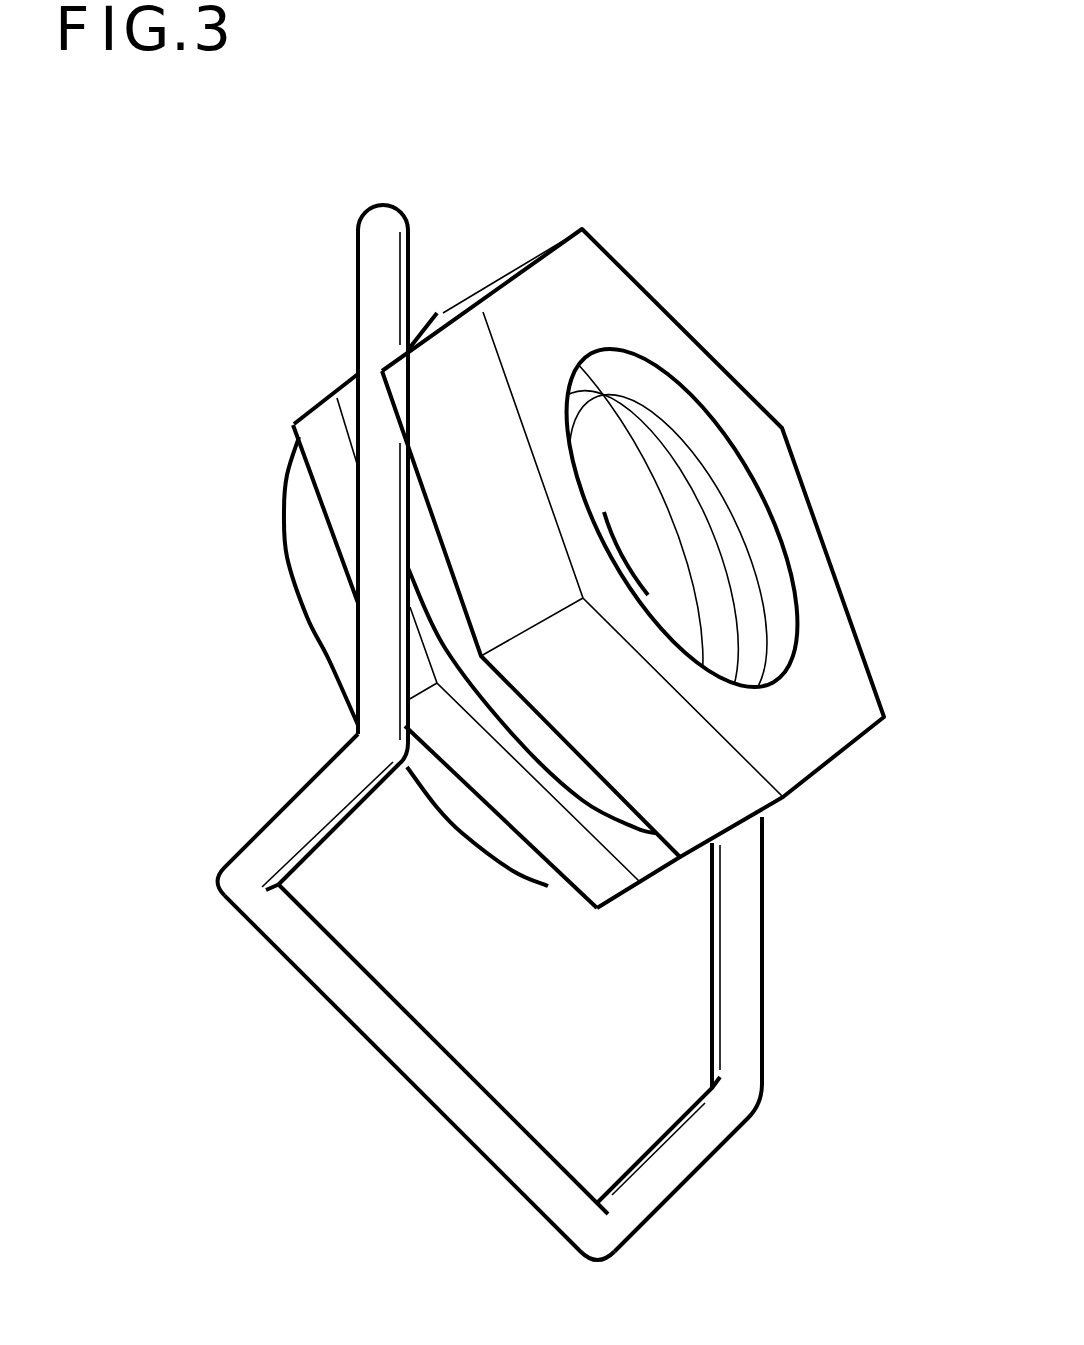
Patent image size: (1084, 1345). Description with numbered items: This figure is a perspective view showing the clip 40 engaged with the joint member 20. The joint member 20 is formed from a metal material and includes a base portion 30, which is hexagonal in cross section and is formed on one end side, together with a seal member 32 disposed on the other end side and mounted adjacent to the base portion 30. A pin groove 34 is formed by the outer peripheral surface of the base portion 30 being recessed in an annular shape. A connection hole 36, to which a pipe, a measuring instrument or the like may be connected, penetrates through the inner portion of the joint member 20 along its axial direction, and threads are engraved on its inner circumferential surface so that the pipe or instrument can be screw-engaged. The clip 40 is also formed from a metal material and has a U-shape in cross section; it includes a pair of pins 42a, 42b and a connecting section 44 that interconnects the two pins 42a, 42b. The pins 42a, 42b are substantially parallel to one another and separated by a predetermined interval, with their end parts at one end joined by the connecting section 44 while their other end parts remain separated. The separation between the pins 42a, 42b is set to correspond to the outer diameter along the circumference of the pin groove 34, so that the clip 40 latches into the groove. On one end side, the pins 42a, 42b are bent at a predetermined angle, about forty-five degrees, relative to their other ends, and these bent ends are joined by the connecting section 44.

The joint member 20 is at (760, 378).
The base portion 30 is at (614, 285).
The seal member 32 is at (318, 648).
The pin groove 34 is at (560, 765).
The connection hole 36 is at (683, 538).
The clip 40 is at (455, 1097).
The pin 42a is at (740, 922).
The pin 42b is at (380, 287).
The connecting section 44 is at (380, 1015).